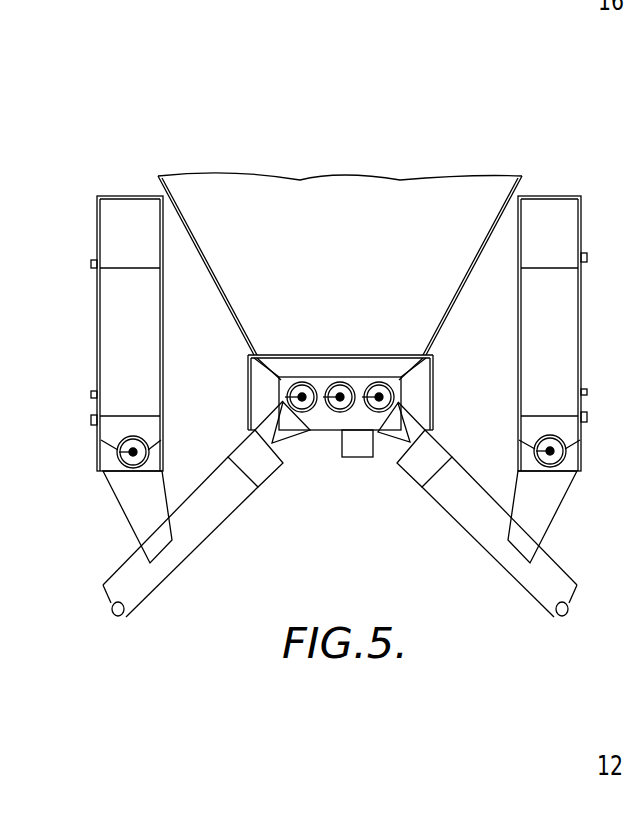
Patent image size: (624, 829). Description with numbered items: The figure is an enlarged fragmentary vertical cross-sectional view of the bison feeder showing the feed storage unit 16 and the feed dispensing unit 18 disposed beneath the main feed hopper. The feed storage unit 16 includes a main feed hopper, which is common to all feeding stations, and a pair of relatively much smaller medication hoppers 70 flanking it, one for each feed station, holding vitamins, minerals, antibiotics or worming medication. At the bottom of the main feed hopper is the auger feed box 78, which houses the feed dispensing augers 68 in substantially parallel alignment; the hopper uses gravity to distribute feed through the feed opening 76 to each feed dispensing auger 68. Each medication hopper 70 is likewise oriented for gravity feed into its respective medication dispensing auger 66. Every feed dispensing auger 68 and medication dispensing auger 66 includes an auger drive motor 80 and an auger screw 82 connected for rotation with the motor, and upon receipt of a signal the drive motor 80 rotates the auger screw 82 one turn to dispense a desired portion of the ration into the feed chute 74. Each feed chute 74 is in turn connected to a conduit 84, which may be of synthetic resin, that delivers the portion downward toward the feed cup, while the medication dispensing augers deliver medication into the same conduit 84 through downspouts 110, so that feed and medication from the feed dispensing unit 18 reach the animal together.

The feed storage unit 16 is at (313, 164).
The feed dispensing unit 18 is at (242, 397).
The medication dispensing auger 66 is at (144, 446).
The feed dispensing auger 68 is at (340, 380).
The medication hopper 70 is at (130, 228).
The feed chute 74 is at (290, 450).
The feed opening 76 is at (288, 378).
The auger feed box 78 is at (436, 387).
The auger drive motor 80 is at (357, 462).
The auger screw 82 is at (300, 380).
The conduit 84 is at (138, 592).
The downspout 110 is at (137, 500).